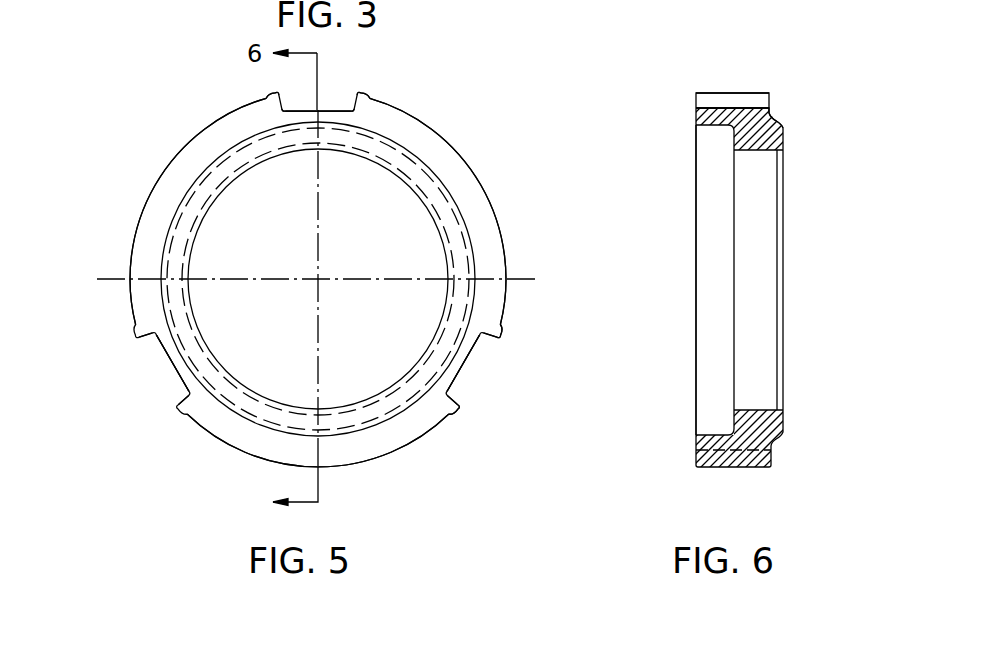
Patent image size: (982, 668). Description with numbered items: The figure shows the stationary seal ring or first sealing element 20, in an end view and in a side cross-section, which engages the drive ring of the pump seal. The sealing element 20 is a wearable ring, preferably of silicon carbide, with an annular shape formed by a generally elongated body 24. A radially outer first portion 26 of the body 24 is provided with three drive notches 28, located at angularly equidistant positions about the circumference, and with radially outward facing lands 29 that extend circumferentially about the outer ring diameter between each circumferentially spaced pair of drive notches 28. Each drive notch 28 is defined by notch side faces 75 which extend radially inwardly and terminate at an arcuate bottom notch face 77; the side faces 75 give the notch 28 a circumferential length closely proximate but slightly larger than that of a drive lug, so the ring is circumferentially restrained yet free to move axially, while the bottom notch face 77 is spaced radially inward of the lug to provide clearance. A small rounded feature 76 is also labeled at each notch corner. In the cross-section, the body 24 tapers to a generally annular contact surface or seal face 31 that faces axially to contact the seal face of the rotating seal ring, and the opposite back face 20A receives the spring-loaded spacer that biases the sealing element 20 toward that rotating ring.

In FIG. 5, the first sealing element 20 is at (437, 97).
In FIG. 6, the first sealing element 20 is at (695, 62).
In FIG. 6, the back face 20A is at (695, 167).
In FIG. 6, the body 24 is at (710, 93).
In FIG. 5, the radially outer first portion 26 is at (187, 143).
In FIG. 6, the radially outer first portion 26 is at (694, 92).
In FIG. 5, the drive notch 28 is at (325, 109).
In FIG. 6, the drive notch 28 is at (722, 104).
In FIG. 5, the land 29 is at (148, 212).
In FIG. 5, the seal face 31 is at (415, 170).
In FIG. 6, the seal face 31 is at (784, 136).
In FIG. 5, the notch side face 75 is at (282, 107).
In FIG. 5, the notch side wall 76 is at (148, 338).
In FIG. 5, the bottom notch face 77 is at (327, 109).